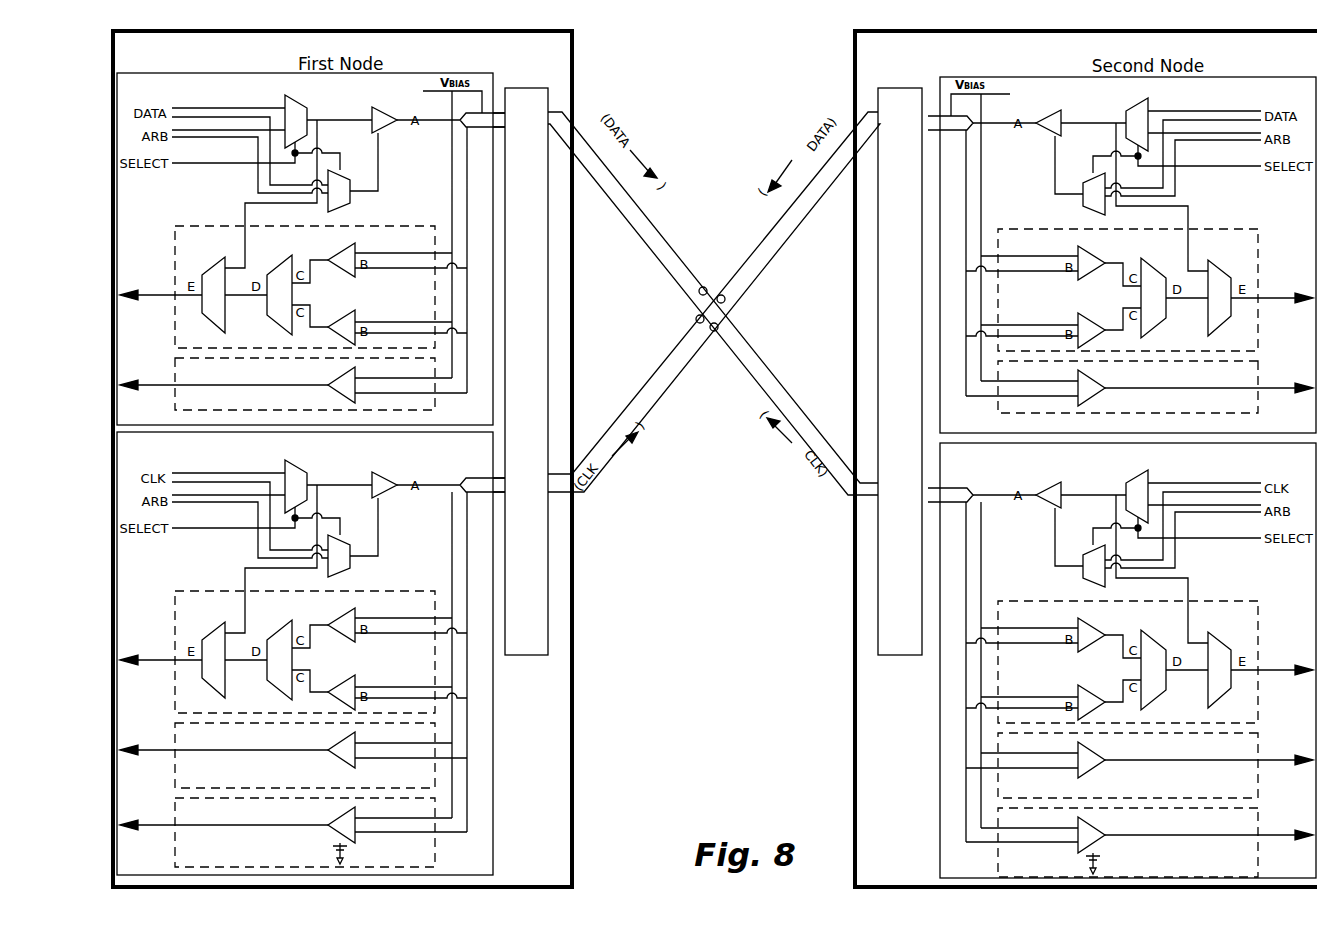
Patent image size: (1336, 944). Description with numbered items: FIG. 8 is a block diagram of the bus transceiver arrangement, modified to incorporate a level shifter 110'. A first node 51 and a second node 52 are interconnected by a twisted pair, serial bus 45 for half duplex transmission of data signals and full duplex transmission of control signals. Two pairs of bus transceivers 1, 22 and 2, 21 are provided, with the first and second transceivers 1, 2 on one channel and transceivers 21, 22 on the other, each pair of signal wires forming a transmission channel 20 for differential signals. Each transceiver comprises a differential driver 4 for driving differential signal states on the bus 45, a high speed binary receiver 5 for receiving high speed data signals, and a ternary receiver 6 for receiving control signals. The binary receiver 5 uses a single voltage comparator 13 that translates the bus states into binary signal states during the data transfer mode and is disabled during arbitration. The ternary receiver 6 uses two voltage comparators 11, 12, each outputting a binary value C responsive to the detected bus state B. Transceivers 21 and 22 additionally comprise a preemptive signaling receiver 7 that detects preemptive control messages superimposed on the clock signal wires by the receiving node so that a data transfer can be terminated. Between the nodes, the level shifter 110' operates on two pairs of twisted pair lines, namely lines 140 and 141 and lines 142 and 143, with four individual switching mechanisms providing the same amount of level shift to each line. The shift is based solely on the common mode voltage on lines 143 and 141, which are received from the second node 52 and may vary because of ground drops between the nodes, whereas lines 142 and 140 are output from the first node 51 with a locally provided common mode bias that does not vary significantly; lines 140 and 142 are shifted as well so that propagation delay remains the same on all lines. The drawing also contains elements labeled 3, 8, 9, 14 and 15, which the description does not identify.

The bus transceiver 1 is at (139, 216).
The bus transceiver 2 is at (1284, 219).
The multiplexer 3 is at (716, 378).
The differential driver 4 is at (716, 307).
The high speed binary receiver 5 is at (716, 578).
The ternary receiver 6 is at (716, 474).
The preemptive signaling receiver 7 is at (716, 837).
The demultiplexer 8 is at (716, 482).
The demultiplexer 9 is at (716, 482).
The voltage comparator 11 is at (716, 447).
The voltage comparator 12 is at (716, 515).
The voltage comparator 13 is at (716, 572).
The receiver buffer 14 is at (716, 830).
The ground connection 15 is at (322, 846).
The transmission channel 20 is at (634, 362).
The bus transceiver 21 is at (133, 584).
The bus transceiver 22 is at (1280, 592).
The twisted pair serial bus 45 is at (690, 455).
The first node 51 is at (288, 53).
The second node 52 is at (1140, 55).
The level shifter 110' is at (713, 393).
The line 140 is at (443, 128).
The line 141 is at (460, 148).
The line 142 is at (667, 236).
The line 143 is at (669, 375).